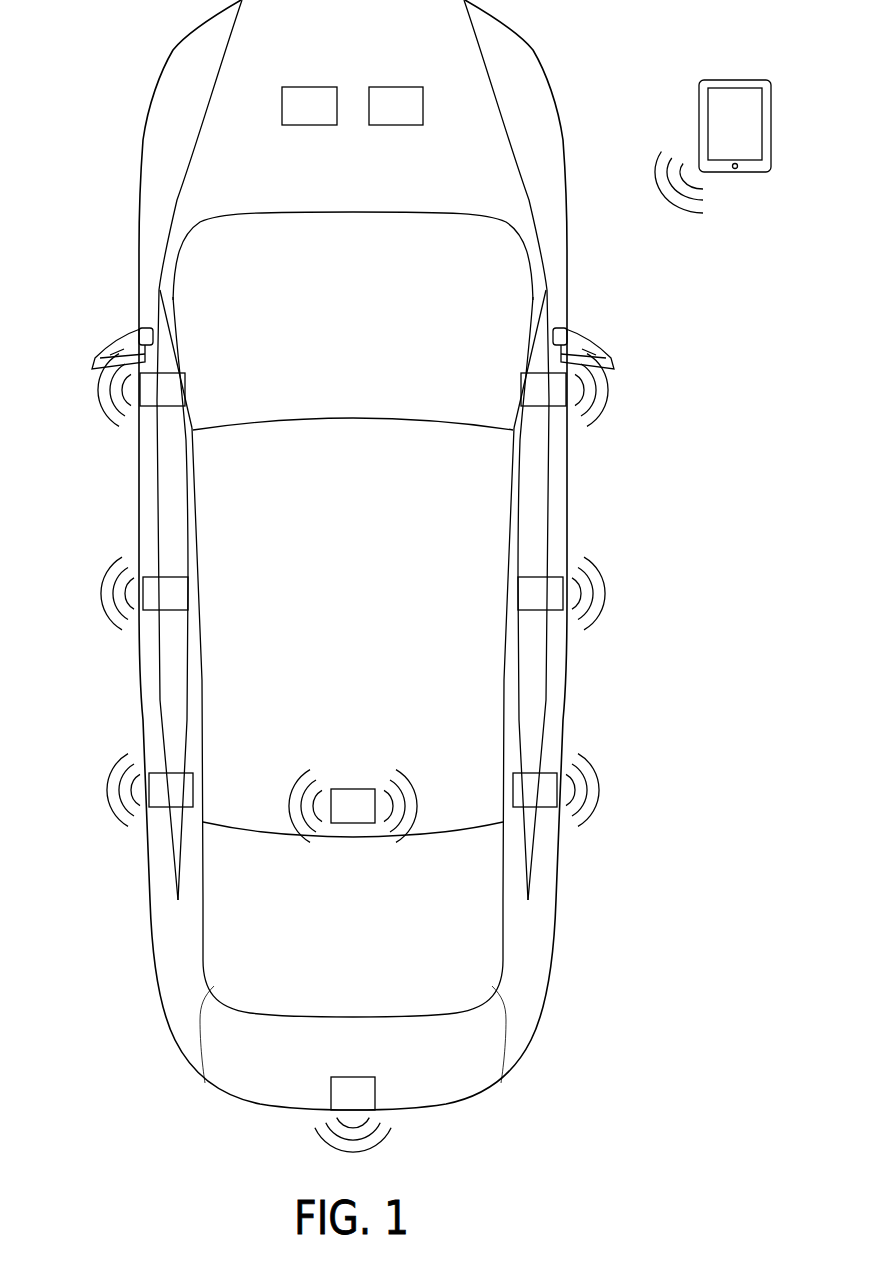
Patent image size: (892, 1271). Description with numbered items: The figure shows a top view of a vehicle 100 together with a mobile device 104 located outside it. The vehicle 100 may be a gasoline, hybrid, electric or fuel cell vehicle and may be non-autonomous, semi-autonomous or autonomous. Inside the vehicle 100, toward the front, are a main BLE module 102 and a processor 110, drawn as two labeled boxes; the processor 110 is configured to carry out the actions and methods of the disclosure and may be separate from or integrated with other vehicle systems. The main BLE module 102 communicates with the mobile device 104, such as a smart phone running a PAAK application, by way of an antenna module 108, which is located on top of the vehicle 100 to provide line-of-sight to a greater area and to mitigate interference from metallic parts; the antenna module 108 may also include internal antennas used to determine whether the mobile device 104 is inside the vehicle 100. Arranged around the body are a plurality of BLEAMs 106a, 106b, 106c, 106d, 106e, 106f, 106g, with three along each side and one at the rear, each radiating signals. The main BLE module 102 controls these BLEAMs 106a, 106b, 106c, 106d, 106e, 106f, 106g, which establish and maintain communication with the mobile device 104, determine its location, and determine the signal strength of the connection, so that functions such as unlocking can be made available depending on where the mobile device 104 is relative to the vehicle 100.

The vehicle 100 is at (543, 73).
The main BLE module 102 is at (330, 116).
The mobile device 104 is at (733, 80).
The BLEAM 106a is at (142, 404).
The BLEAM 106b is at (150, 598).
The BLEAM 106c is at (157, 800).
The BLEAM 106d is at (360, 1093).
The BLEAM 106e is at (549, 800).
The BLEAM 106f is at (556, 598).
The BLEAM 106g is at (564, 404).
The antenna module 108 is at (350, 788).
The processor 110 is at (416, 116).